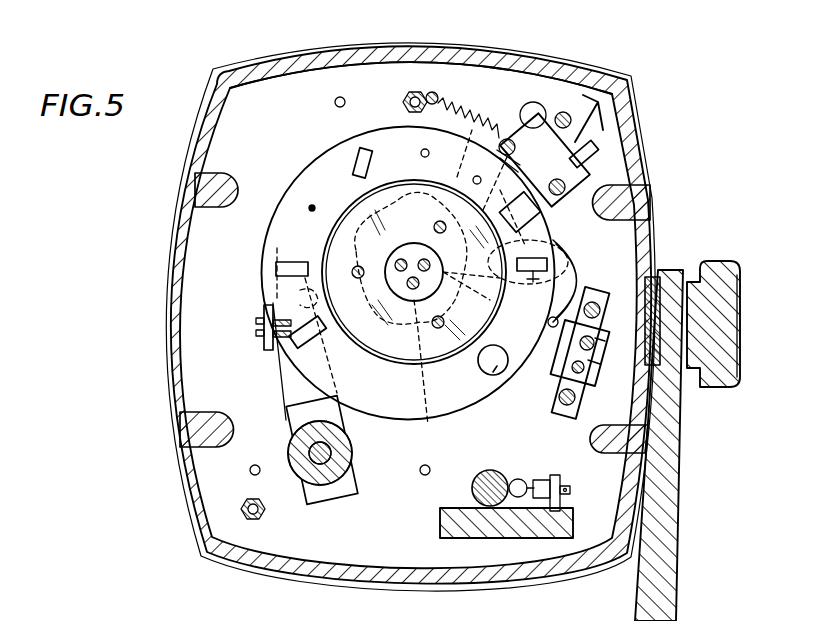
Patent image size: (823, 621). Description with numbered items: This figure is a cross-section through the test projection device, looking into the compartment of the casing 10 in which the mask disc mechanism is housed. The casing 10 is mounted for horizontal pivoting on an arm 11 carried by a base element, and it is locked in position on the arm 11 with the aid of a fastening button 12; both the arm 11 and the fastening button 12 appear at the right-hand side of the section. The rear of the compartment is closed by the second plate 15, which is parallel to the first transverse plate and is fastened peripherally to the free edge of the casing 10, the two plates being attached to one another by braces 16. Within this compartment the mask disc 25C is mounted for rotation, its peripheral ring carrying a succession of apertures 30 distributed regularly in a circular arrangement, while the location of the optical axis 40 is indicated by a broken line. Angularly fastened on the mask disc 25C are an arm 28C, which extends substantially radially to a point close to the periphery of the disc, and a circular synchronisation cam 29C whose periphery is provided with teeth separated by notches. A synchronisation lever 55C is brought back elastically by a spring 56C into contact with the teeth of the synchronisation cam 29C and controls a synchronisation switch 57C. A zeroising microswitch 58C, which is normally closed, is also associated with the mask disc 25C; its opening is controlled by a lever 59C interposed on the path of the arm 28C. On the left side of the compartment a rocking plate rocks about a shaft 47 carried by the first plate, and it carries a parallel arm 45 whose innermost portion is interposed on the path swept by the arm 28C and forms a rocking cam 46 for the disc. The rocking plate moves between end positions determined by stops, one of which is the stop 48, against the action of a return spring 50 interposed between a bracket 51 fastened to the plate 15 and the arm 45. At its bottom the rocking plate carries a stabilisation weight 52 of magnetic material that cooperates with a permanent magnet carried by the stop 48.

The casing 10 is at (632, 80).
The arm 11 is at (668, 588).
The fastening button 12 is at (709, 268).
The second plate 15 is at (228, 76).
The braces 16 is at (410, 92).
The mask disc 25C is at (385, 419).
The arm 28C is at (528, 340).
The circular synchronisation cam 29C is at (423, 295).
The apertures 30 is at (365, 150).
The optical axis 40 is at (553, 280).
The arm 45 is at (297, 418).
The rocking cam 46 is at (276, 292).
The shaft 47 is at (313, 472).
The stop 48 is at (533, 510).
The return spring 50 is at (290, 330).
The bracket 51 is at (266, 344).
The stabilisation weight 52 is at (486, 500).
The synchronisation lever 55C is at (505, 140).
The spring 56C is at (452, 102).
The synchronisation switch 57C is at (590, 150).
The zeroising microswitch 58C is at (593, 358).
The lever 59C is at (553, 320).